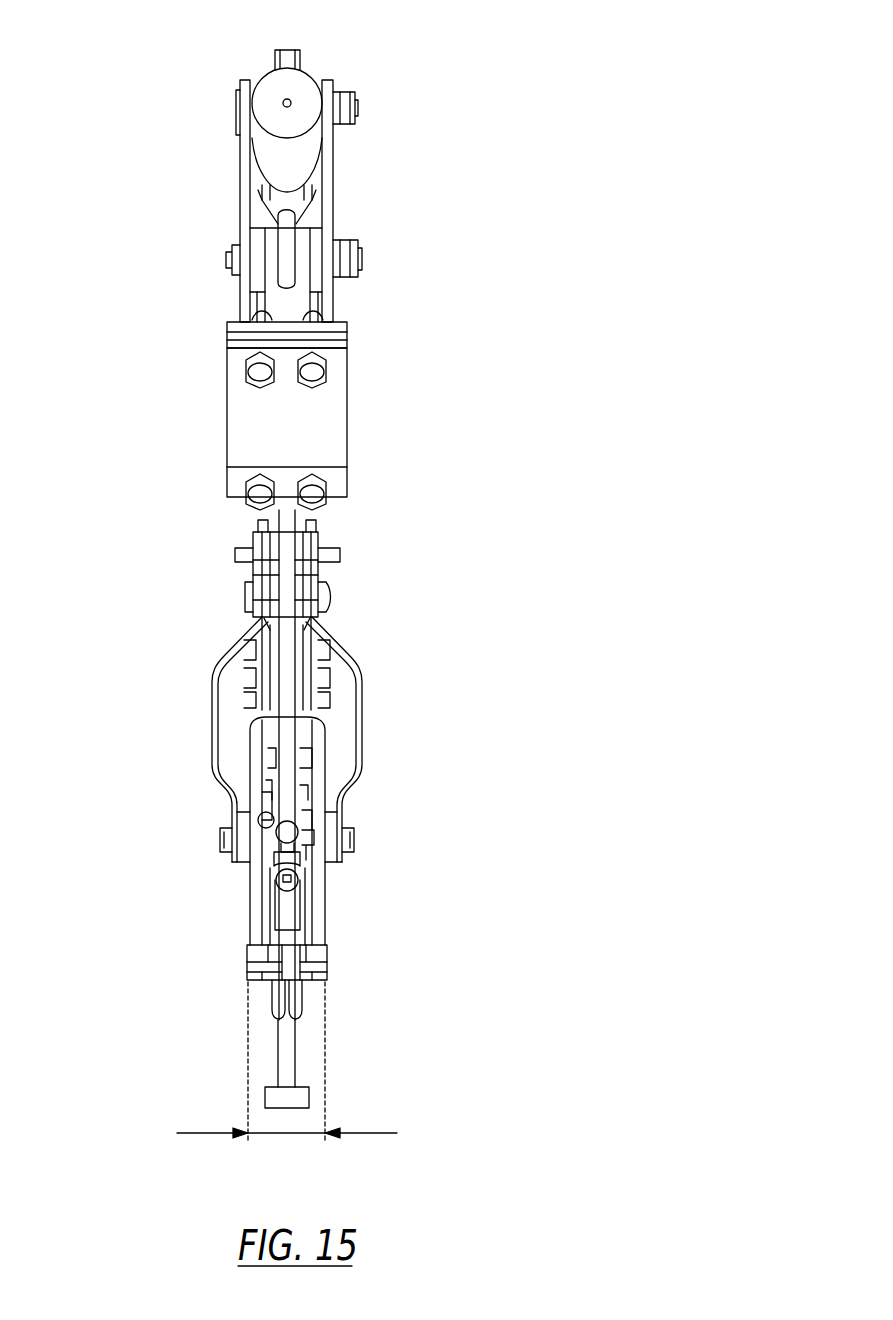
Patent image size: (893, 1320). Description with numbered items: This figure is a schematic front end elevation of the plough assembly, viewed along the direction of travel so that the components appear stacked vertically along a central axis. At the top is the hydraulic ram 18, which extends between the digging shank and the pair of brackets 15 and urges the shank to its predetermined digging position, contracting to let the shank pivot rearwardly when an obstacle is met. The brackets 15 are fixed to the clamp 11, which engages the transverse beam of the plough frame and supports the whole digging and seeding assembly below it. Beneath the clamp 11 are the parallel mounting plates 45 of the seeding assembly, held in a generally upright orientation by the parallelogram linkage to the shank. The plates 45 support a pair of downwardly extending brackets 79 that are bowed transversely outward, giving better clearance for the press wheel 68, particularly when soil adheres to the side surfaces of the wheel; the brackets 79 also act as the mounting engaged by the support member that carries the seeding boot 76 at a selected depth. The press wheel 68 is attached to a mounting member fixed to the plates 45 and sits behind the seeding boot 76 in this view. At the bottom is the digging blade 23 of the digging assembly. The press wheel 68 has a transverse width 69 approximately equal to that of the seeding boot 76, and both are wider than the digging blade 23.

The hydraulic ram 18 is at (305, 90).
The brackets 15 is at (243, 190).
The clamp 11 is at (365, 447).
The mounting plates 45 is at (253, 575).
The brackets 79 is at (210, 710).
The press wheel 68 is at (325, 923).
The seeding boot 76 is at (327, 958).
The digging blade 23 is at (309, 1095).
The transverse width 69 is at (285, 1133).